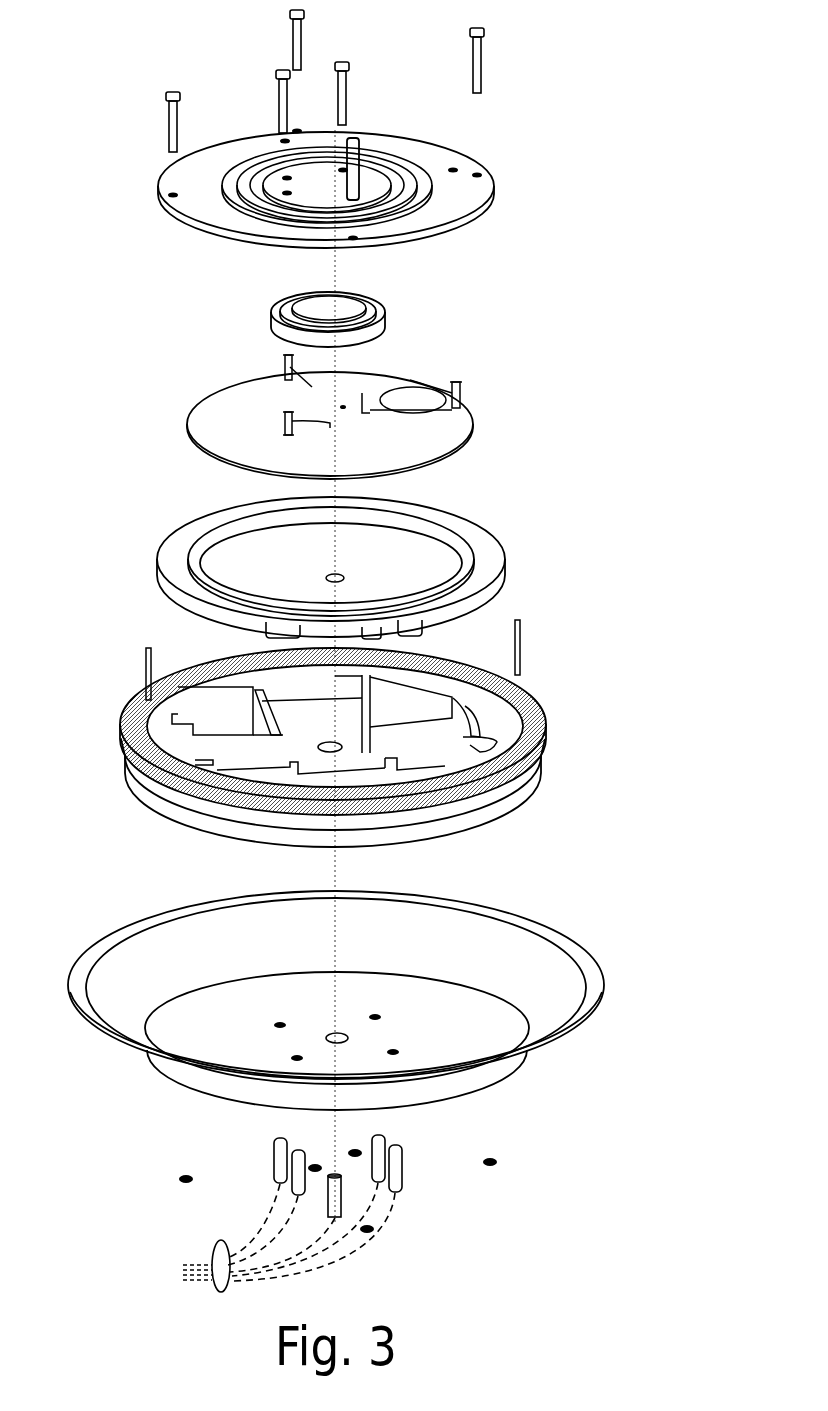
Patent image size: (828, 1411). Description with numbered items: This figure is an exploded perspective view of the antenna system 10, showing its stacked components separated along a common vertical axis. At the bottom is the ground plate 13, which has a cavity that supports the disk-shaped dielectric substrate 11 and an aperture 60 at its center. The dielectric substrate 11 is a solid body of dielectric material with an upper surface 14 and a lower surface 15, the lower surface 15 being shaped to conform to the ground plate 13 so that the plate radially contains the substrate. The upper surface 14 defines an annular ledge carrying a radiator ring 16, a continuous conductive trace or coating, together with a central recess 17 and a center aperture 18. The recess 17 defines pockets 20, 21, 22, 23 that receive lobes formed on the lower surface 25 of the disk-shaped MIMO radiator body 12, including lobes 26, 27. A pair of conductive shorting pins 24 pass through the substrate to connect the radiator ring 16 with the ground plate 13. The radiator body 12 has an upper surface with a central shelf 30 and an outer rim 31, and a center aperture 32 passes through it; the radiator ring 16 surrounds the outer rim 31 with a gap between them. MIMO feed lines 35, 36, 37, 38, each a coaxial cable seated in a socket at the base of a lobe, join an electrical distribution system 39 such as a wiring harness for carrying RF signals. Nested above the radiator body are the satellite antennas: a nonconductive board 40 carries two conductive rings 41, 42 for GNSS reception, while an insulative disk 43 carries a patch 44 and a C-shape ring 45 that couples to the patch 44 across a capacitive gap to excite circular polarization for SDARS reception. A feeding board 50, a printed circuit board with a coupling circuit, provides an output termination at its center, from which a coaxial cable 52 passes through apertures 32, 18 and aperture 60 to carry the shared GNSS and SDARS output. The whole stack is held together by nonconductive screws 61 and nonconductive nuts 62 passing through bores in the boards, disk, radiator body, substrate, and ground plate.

The antenna system 10 is at (690, 252).
The dielectric substrate 11 is at (140, 780).
The MIMO radiator body 12 is at (150, 555).
The ground plate 13 is at (555, 930).
The upper surface 14 is at (485, 710).
The lower surface 15 is at (430, 835).
The radiator ring 16 is at (525, 720).
The central recess 17 is at (240, 757).
The center aperture 18 is at (320, 746).
The pocket 20 is at (220, 705).
The pocket 21 is at (262, 775).
The pocket 22 is at (445, 770).
The pocket 23 is at (430, 690).
The shorting pins 24 is at (520, 640).
The lower surface 25 is at (372, 635).
The lobe 26 is at (425, 622).
The lobe 27 is at (275, 630).
The central shelf 30 is at (378, 543).
The outer rim 31 is at (483, 555).
The center aperture 32 is at (330, 572).
The MIMO feed line 35 is at (273, 1148).
The MIMO feed line 36 is at (295, 1187).
The MIMO feed line 37 is at (385, 1140).
The MIMO feed line 38 is at (400, 1168).
The electrical distribution system 39 is at (212, 1255).
The nonconductive board 40 is at (470, 212).
The conductive ring 41 is at (415, 170).
The conductive ring 42 is at (395, 178).
The insulative disk 43 is at (283, 327).
The patch 44 is at (305, 305).
The C-shape ring 45 is at (360, 305).
The feeding board 50 is at (207, 428).
The coaxial cable 52 is at (342, 1203).
The aperture 60 is at (330, 1035).
The nonconductive screws 61 is at (162, 125).
The nonconductive nuts 62 is at (178, 1175).